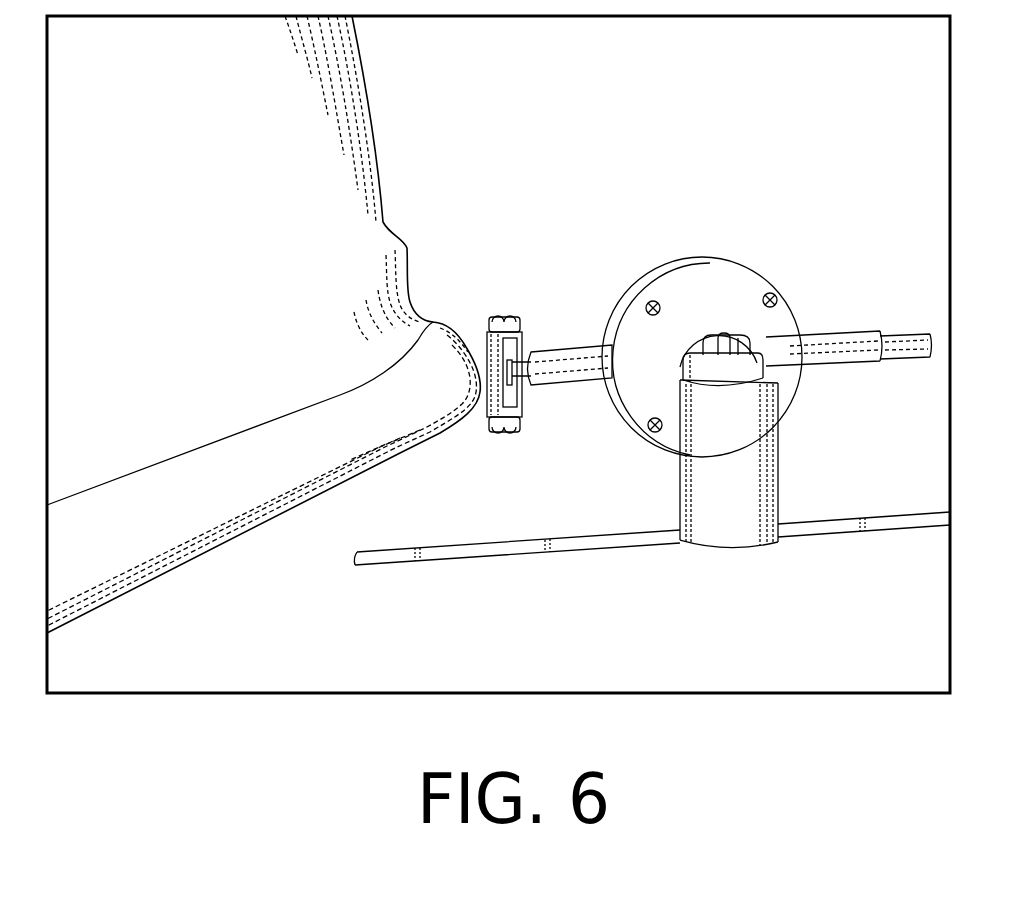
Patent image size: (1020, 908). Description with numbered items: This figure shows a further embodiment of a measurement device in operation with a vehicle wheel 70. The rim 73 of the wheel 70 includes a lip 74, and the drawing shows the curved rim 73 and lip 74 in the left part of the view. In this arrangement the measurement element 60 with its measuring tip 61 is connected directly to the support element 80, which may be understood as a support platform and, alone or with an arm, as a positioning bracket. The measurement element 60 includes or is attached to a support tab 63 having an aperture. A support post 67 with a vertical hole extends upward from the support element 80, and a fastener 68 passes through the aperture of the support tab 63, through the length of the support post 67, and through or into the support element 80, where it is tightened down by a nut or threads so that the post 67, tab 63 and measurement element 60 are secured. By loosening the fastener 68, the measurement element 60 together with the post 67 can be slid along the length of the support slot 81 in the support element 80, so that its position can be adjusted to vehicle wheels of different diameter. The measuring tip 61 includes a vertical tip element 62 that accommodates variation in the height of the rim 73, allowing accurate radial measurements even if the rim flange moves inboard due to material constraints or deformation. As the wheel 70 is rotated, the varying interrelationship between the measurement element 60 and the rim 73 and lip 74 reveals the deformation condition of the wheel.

The measurement element 60 is at (637, 277).
The measuring tip 61 is at (540, 326).
The vertical tip element 62 is at (492, 405).
The support tab 63 is at (760, 368).
The support post 67 is at (753, 480).
The fastener 68 is at (745, 333).
The vehicle wheel 70 is at (112, 618).
The rim 73 is at (385, 137).
The lip 74 is at (448, 333).
The support element 80 is at (602, 652).
The support slot 81 is at (468, 556).